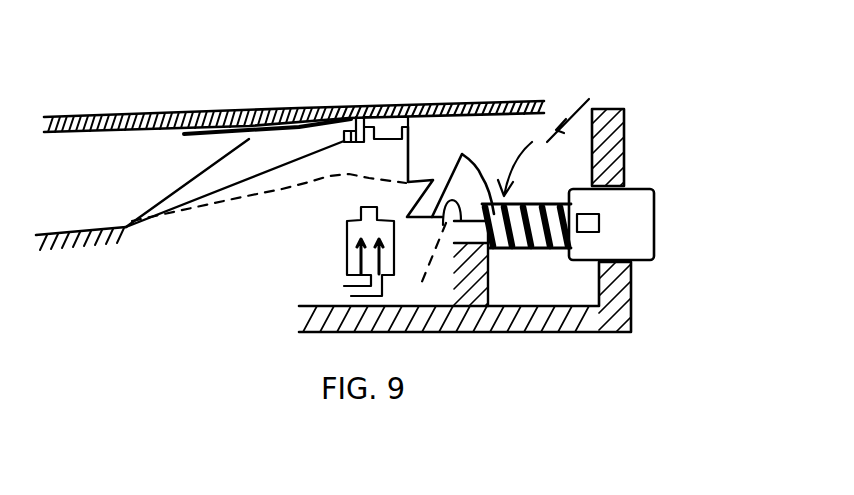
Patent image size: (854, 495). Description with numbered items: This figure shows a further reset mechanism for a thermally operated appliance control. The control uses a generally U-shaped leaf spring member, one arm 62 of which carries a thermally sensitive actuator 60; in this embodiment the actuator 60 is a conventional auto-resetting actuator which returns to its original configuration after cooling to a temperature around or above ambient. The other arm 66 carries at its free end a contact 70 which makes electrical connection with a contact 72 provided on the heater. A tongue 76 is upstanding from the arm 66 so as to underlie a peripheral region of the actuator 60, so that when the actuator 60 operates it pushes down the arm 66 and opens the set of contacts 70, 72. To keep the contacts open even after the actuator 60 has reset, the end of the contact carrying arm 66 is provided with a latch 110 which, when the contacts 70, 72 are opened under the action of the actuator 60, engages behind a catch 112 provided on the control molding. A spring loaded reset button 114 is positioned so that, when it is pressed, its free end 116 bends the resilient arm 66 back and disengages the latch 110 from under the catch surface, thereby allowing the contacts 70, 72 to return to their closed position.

The arm 62 is at (205, 165).
The actuator 60 is at (275, 135).
The tongue 76 is at (355, 110).
The contact 72 is at (410, 108).
The contact 70 is at (474, 104).
The latch 110 is at (430, 149).
The reset button 114 is at (657, 224).
The free end 116 is at (489, 272).
The catch 112 is at (455, 222).
The arm 66 is at (270, 172).